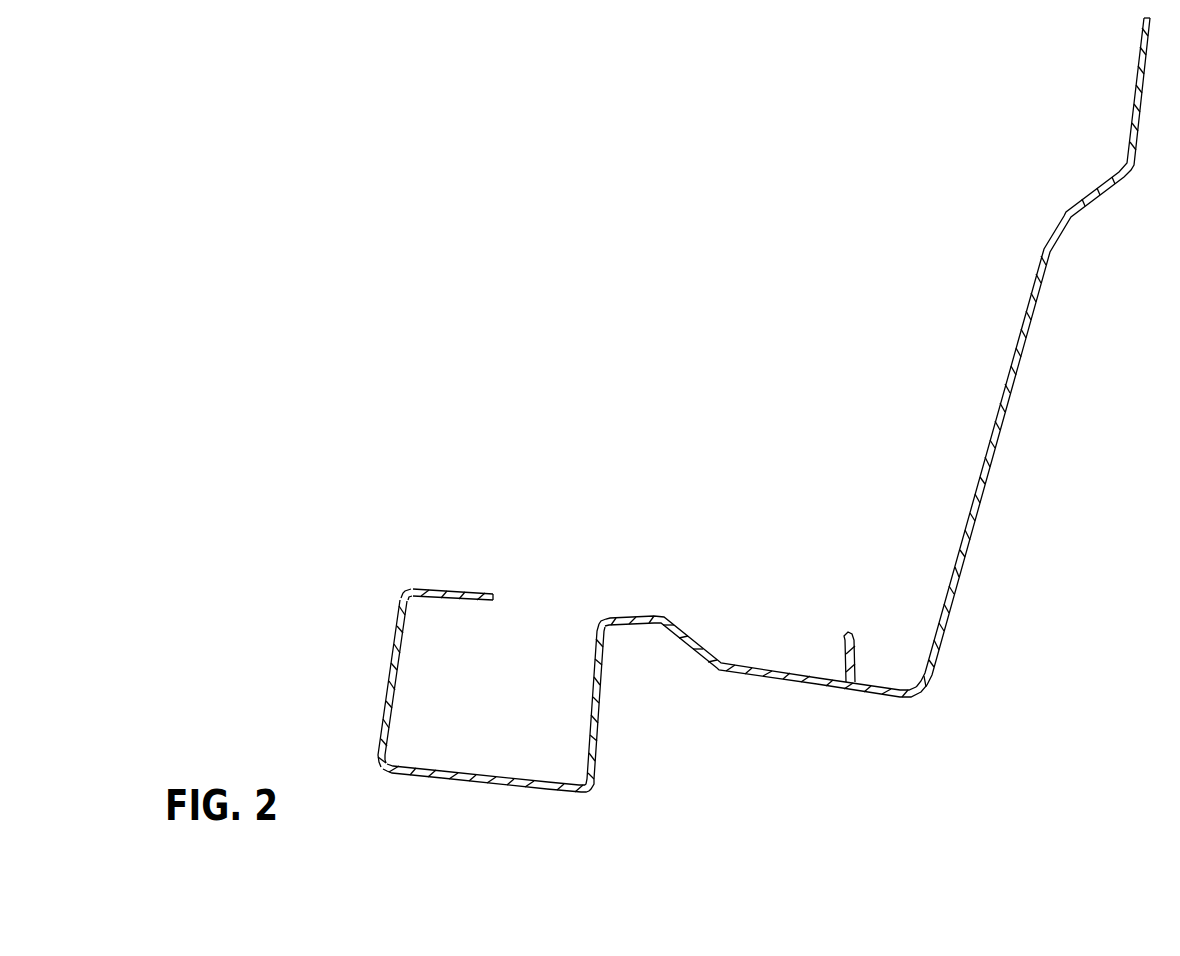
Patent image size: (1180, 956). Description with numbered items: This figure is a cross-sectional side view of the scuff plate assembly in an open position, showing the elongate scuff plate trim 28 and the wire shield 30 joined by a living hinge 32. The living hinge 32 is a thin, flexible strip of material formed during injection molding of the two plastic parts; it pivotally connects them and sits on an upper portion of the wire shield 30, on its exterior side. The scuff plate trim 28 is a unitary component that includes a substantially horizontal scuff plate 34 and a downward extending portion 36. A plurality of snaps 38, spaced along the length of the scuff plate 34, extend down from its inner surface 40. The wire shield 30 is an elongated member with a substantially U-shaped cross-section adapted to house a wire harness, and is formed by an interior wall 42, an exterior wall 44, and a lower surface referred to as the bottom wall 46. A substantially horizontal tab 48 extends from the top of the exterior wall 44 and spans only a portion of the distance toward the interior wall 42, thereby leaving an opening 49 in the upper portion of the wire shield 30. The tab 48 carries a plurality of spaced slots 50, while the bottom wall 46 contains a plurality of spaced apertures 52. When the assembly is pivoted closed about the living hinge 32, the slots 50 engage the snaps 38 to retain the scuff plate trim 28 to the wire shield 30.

The scuff plate trim 28 is at (604, 246).
The wire shield 30 is at (440, 787).
The living hinge 32 is at (662, 623).
The scuff plate 34 is at (797, 690).
The downward extending portion 36 is at (1000, 420).
The snaps 38 is at (858, 635).
The inner surface 40 is at (762, 665).
The interior wall 42 is at (593, 690).
The exterior wall 44 is at (388, 653).
The bottom wall 46 is at (498, 788).
The tab 48 is at (422, 583).
The opening 49 is at (537, 628).
The slots 50 is at (455, 588).
The apertures 52 is at (485, 787).